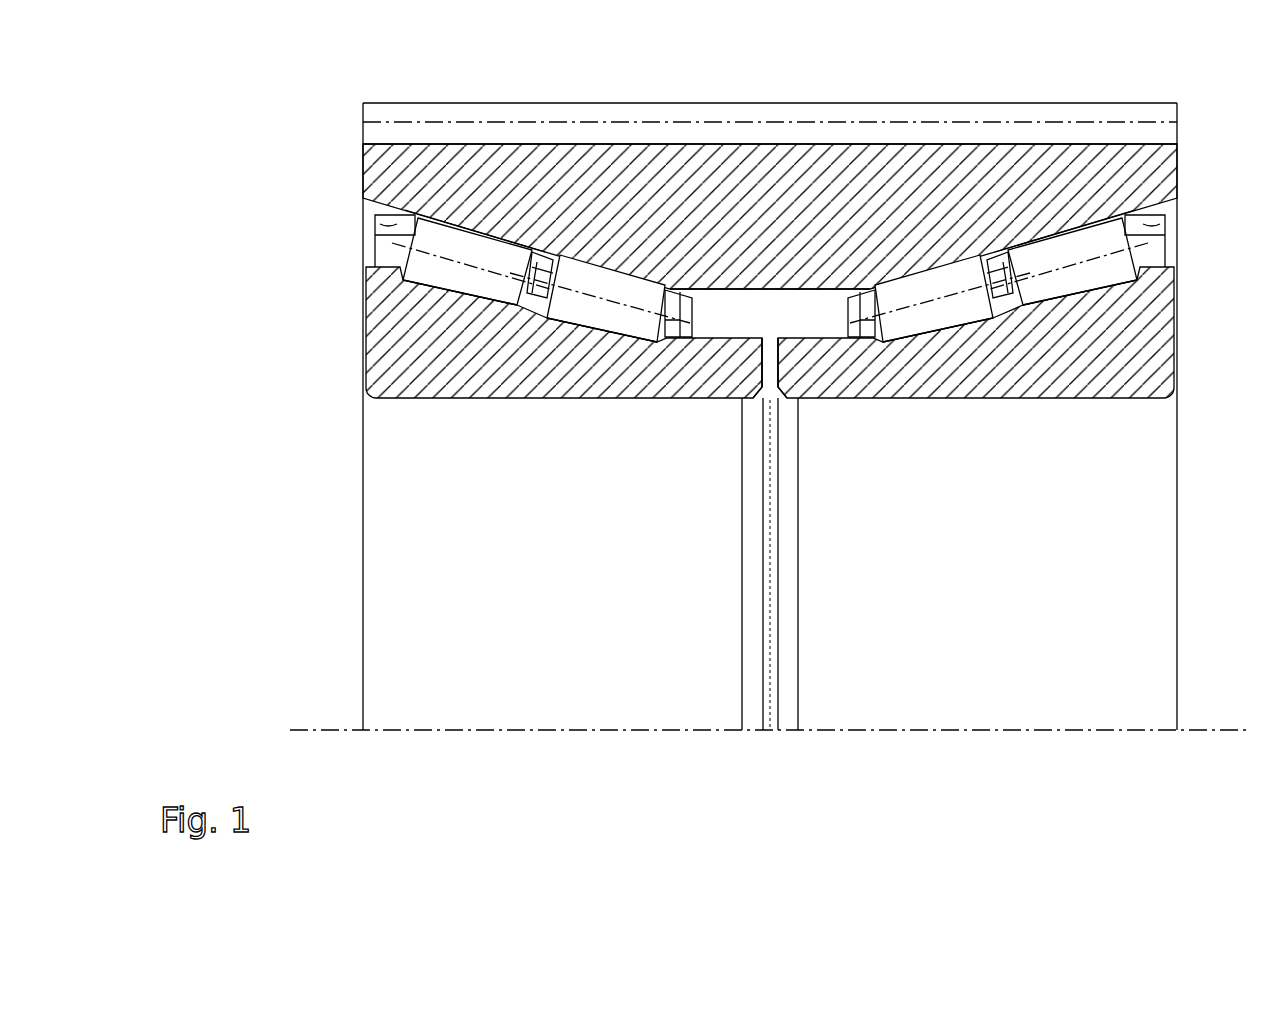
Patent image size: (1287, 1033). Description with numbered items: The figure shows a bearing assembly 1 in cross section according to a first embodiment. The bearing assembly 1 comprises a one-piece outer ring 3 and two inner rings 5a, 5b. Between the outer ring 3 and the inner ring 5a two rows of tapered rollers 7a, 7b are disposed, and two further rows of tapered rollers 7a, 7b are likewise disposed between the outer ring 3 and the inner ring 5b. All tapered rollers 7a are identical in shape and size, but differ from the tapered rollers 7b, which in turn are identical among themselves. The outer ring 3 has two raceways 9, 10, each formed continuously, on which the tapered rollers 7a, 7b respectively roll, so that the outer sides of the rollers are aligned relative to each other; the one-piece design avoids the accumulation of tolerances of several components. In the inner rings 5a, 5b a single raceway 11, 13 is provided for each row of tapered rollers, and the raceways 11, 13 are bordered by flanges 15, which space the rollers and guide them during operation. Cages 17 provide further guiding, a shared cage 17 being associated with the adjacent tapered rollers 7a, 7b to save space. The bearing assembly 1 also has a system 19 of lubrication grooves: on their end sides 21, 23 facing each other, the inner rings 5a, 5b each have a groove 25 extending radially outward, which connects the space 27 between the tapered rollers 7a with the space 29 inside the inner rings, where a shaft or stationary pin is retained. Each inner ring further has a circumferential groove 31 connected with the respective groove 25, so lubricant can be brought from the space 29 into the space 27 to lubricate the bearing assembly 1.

The bearing assembly 1 is at (288, 188).
The outer ring 3 is at (1165, 157).
The inner ring 5a is at (380, 352).
The inner ring 5b is at (1165, 352).
The tapered rollers 7a is at (486, 258).
The tapered rollers 7b is at (620, 302).
The raceway 9 is at (510, 235).
The raceway 10 is at (1015, 240).
The raceway 11 is at (460, 300).
The raceway 13 is at (597, 330).
The flanges 15 is at (378, 272).
The cage 17 is at (390, 225).
The system of lubrication grooves 19 is at (818, 465).
The end side 21 is at (752, 371).
The end side 23 is at (790, 367).
The groove 25 is at (776, 340).
The space 27 is at (737, 325).
The space 29 is at (595, 567).
The circumferential groove 31 is at (742, 550).